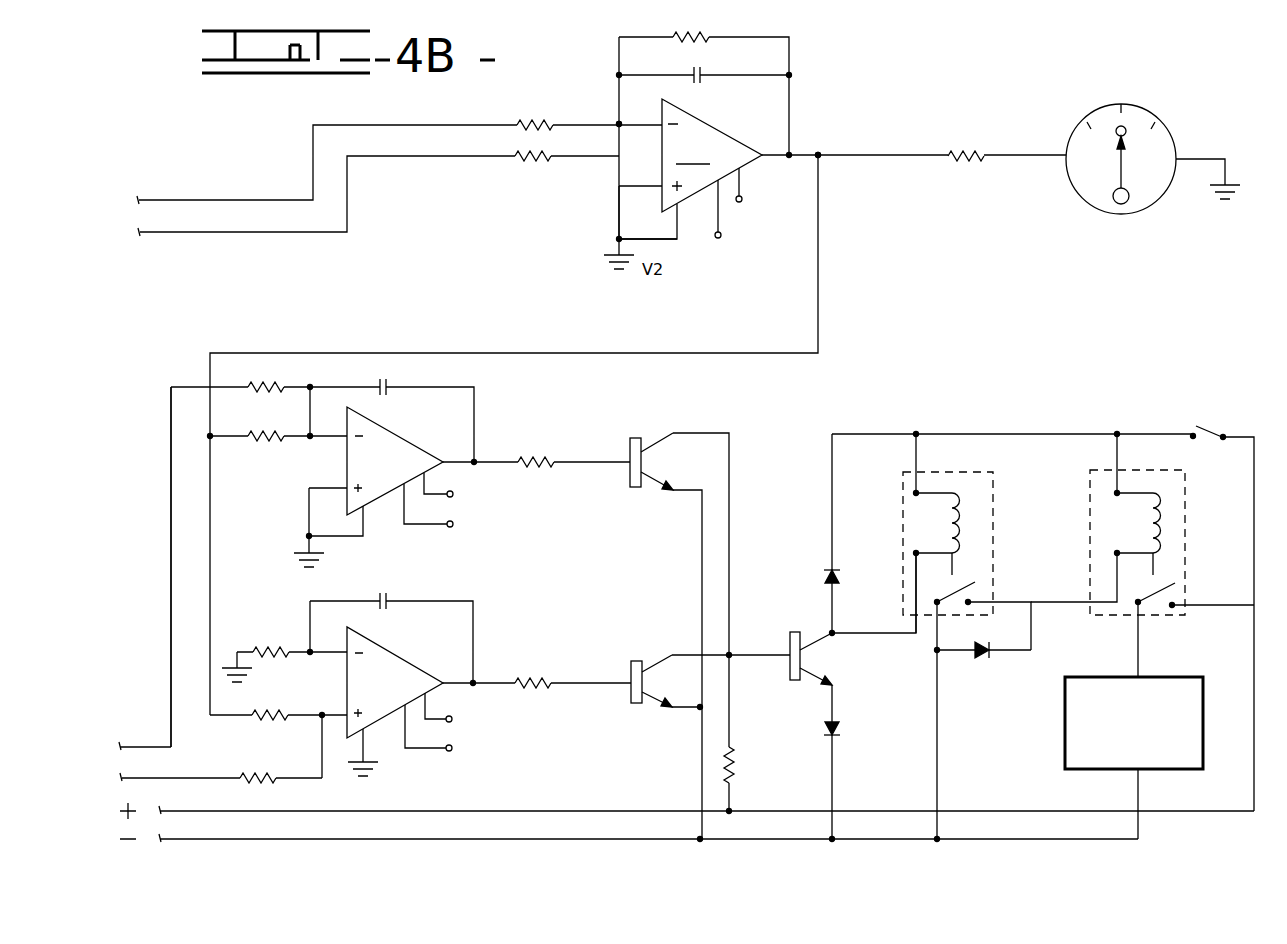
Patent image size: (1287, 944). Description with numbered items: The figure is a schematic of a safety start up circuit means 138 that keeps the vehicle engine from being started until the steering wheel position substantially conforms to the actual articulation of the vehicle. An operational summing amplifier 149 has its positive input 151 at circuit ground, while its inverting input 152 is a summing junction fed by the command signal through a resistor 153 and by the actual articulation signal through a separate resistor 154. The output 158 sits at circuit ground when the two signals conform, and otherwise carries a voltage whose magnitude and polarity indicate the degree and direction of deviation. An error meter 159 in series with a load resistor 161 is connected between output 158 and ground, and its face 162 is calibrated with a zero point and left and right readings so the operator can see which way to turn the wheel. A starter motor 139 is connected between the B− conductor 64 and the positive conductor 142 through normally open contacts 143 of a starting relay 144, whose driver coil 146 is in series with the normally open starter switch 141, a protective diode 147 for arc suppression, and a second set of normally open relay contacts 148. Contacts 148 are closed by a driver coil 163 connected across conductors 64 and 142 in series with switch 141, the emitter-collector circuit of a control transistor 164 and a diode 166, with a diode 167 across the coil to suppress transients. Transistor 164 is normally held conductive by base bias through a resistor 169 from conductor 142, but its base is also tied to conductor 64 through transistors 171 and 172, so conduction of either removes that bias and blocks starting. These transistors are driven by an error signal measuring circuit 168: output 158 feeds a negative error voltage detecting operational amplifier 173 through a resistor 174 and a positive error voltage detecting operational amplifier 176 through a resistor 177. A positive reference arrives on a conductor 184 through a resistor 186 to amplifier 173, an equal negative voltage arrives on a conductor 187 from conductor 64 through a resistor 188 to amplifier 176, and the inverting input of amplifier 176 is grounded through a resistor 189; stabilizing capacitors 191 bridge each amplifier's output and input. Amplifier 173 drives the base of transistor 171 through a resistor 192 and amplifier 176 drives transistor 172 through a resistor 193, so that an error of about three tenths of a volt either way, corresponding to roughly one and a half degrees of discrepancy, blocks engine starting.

The B− conductor 64 is at (313, 838).
The safety start up circuit means 138 is at (1187, 398).
The starter motor 139 is at (1160, 684).
The starter switch 141 is at (1210, 440).
The conductor 142 is at (432, 811).
The normally open contacts 143 is at (1185, 598).
The starting relay 144 is at (1187, 547).
The driver coil 146 is at (1170, 497).
The protective diode 147 is at (987, 664).
The normally open relay contacts 148 is at (987, 598).
The operational summing amplifier 149 is at (712, 172).
The positive input 151 is at (619, 205).
The inverting input 152 is at (619, 124).
The resistor 153 is at (522, 121).
The resistor 154 is at (548, 160).
The output 158 is at (818, 155).
The error meter 159 is at (1175, 142).
The load resistor 161 is at (969, 152).
The face 162 is at (1082, 183).
The driver coil 163 is at (950, 480).
The control transistor 164 is at (794, 632).
The diode 166 is at (837, 738).
The diode 167 is at (828, 568).
The error signal measuring circuit 168 is at (367, 345).
The resistor 169 is at (738, 780).
The transistor 171 is at (641, 437).
The transistor 172 is at (636, 705).
The negative error voltage detecting operational amplifier 173 is at (385, 436).
The resistor 174 is at (272, 447).
The positive error voltage detecting operational amplifier 176 is at (385, 656).
The resistor 177 is at (266, 722).
The conductor 184 is at (171, 552).
The resistor 186 is at (277, 385).
The conductor 187 is at (185, 778).
The resistor 188 is at (247, 782).
The resistor 189 is at (284, 648).
The stabilizing capacitors 191 is at (390, 387).
The resistor 192 is at (553, 458).
The resistor 193 is at (528, 680).